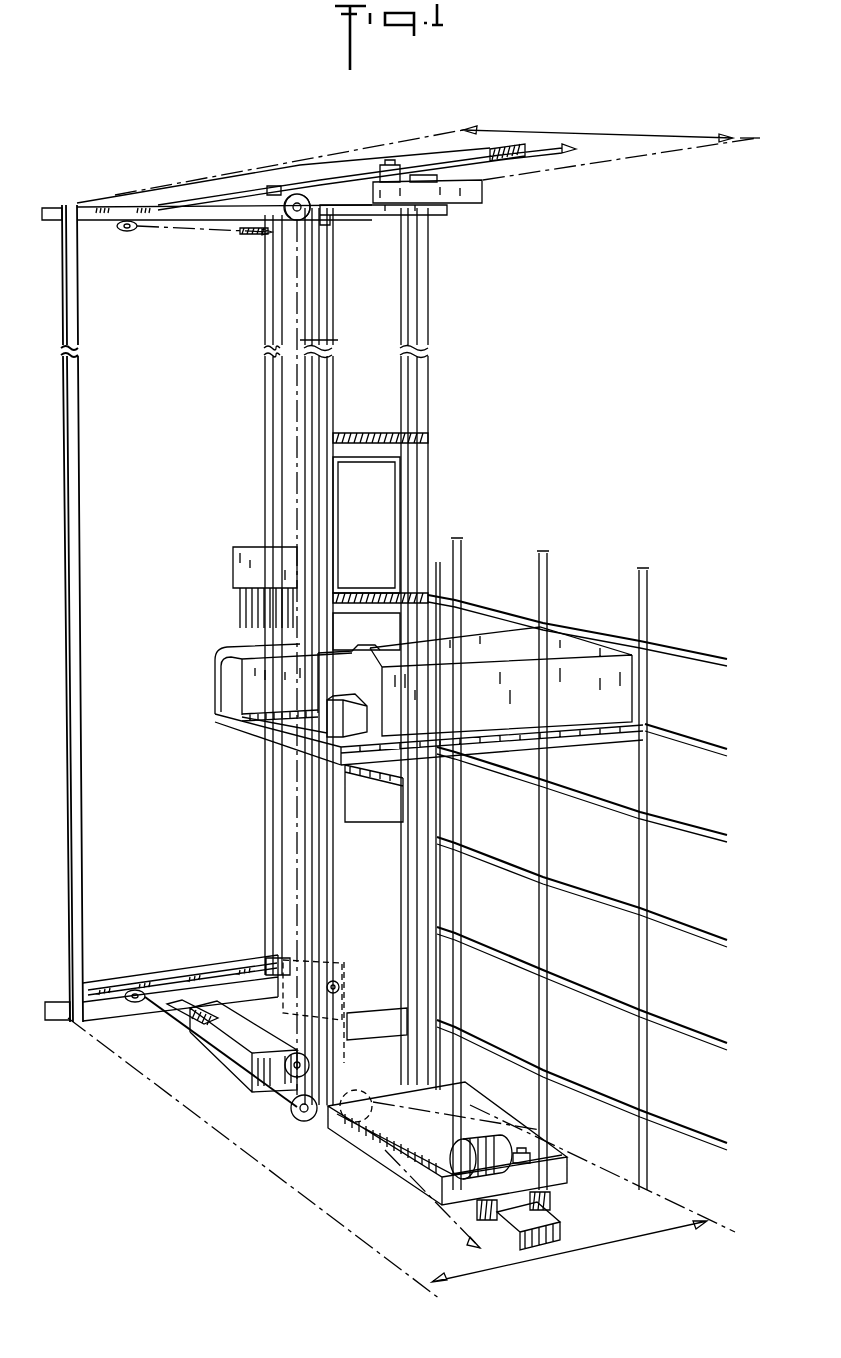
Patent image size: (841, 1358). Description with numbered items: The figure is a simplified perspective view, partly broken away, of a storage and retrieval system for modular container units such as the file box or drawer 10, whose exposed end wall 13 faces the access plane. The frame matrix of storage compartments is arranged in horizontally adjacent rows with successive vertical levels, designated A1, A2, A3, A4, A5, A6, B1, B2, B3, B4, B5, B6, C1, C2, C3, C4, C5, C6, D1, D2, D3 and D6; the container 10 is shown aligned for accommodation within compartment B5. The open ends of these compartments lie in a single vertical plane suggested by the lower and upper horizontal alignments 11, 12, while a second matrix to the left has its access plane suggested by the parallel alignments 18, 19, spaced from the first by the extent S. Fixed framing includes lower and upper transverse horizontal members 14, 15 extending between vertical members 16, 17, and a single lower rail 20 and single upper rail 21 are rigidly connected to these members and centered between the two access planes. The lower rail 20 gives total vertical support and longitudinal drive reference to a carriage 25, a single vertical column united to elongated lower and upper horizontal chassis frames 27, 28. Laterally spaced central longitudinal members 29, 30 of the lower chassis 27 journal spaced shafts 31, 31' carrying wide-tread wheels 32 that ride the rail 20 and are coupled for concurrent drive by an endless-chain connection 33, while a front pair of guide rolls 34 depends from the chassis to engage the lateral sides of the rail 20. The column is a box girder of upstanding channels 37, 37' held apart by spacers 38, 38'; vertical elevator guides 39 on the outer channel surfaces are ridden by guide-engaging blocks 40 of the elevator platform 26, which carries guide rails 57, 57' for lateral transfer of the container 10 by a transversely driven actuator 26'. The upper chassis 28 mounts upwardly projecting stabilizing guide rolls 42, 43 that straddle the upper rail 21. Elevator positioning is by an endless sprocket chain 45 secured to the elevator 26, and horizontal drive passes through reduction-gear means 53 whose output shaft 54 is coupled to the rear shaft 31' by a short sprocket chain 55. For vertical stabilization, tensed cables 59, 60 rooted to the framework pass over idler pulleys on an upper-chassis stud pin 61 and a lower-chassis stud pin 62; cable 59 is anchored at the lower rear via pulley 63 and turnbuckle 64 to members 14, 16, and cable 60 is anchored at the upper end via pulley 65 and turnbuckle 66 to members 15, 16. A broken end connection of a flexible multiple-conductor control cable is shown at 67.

The file box or drawer 10 is at (500, 703).
The lower horizontal alignment 11 is at (690, 1204).
The upper horizontal alignment 12 is at (625, 163).
The end wall 13 is at (370, 662).
The lower transverse horizontal member 14 is at (115, 1035).
The upper transverse horizontal member 15 is at (97, 207).
The vertical member 16 is at (264, 314).
The vertical member 17 is at (77, 292).
The lower horizontal alignment 18 is at (242, 1150).
The upper horizontal alignment 19 is at (236, 172).
The lower rail 20 is at (533, 1240).
The upper rail 21 is at (497, 150).
The carriage 25 is at (440, 345).
The elevator platform 26 is at (262, 739).
The transversely driven actuator 26' is at (294, 742).
The lower horizontal chassis frame 27 is at (250, 1086).
The upper horizontal chassis frame 28 is at (490, 200).
The central longitudinal member 29 is at (395, 1135).
The central longitudinal member 30 is at (447, 1122).
The shaft 31 is at (557, 1130).
The rear shaft 31' is at (340, 1139).
The supporting roller or wheel 32 is at (488, 1140).
The endless-chain connection 33 is at (422, 1140).
The front pair of guide rolls 34 is at (490, 1222).
The upstanding channel 37 is at (380, 351).
The upstanding channel 37' is at (412, 496).
The spacer 38 is at (366, 521).
The spacer 38' is at (366, 514).
The vertical elevator guides 39 is at (320, 345).
The guide-engaging blocks 40 is at (290, 645).
The stabilizing guide rolls 42 is at (388, 166).
The stabilizing guide rolls 43 is at (278, 186).
The endless sprocket chain 45 is at (352, 1030).
The reduction-gear means 53 is at (292, 1006).
The output shaft 54 is at (356, 935).
The short sprocket-chain 55 is at (347, 1013).
The guide rail 57 is at (492, 724).
The guide rail 57' is at (280, 693).
The cable 59 is at (530, 160).
The cable 60 is at (215, 229).
The upper-chassis stud pin 61 is at (292, 222).
The lower-chassis stud pin 62 is at (290, 1112).
The pulley 63 is at (135, 990).
The turn-buckle 64 is at (246, 970).
The pulley 65 is at (124, 231).
The turnbuckle 66 is at (249, 236).
The broken end connection of multiple-conductor cable 67 is at (238, 598).
The spacing between access planes S is at (634, 124).
The storage compartment A1 is at (693, 1103).
The storage compartment A2 is at (693, 1003).
The storage compartment A3 is at (693, 901).
The storage compartment A4 is at (693, 804).
The storage compartment A5 is at (693, 720).
The storage compartment A6 is at (690, 635).
The storage compartment B1 is at (592, 1062).
The storage compartment B2 is at (592, 962).
The storage compartment B3 is at (592, 869).
The storage compartment B4 is at (592, 772).
The storage compartment B5 is at (598, 640).
The storage compartment B6 is at (590, 613).
The storage compartment C1 is at (500, 1020).
The storage compartment C2 is at (500, 926).
The storage compartment C3 is at (500, 837).
The storage compartment C4 is at (500, 746).
The storage compartment C5 is at (508, 628).
The storage compartment C6 is at (500, 593).
The storage compartment D1 is at (441, 968).
The storage compartment D2 is at (441, 880).
The storage compartment D3 is at (441, 792).
The storage compartment D6 is at (442, 566).